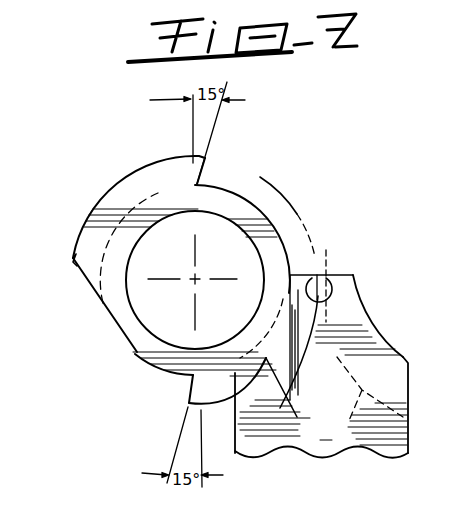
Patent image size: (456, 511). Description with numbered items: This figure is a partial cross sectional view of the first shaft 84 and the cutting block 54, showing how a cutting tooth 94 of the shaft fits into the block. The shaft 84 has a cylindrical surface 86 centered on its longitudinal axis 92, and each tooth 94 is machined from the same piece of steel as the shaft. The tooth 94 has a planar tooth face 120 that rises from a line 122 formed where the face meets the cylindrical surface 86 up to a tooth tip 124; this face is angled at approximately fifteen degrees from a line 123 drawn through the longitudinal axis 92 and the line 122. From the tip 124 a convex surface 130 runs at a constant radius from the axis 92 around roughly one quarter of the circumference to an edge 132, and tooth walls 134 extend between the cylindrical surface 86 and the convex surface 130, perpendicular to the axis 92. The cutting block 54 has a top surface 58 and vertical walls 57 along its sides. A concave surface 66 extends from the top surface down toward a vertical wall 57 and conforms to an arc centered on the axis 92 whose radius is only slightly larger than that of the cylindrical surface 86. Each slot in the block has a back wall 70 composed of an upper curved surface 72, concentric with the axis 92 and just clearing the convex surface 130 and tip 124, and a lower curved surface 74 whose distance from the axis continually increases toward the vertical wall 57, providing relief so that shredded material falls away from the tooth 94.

The cutting block 54 is at (416, 417).
The vertical wall 57 is at (412, 438).
The top surface 58 is at (334, 272).
The concave surface 66 is at (255, 321).
The back wall 70 is at (338, 369).
The upper curved surface 72 is at (306, 275).
The lower curved surface 74 is at (302, 429).
The first shaft 84 is at (60, 257).
The cylindrical surface 86 is at (140, 360).
The longitudinal axis 92 is at (189, 288).
The tooth 94 is at (164, 151).
The tooth face 120 is at (211, 163).
The line 122 is at (199, 184).
The line 123 is at (192, 94).
The tooth tip 124 is at (208, 149).
The convex surface 130 is at (99, 203).
The edge 132 is at (72, 262).
The tooth wall 134 is at (130, 188).